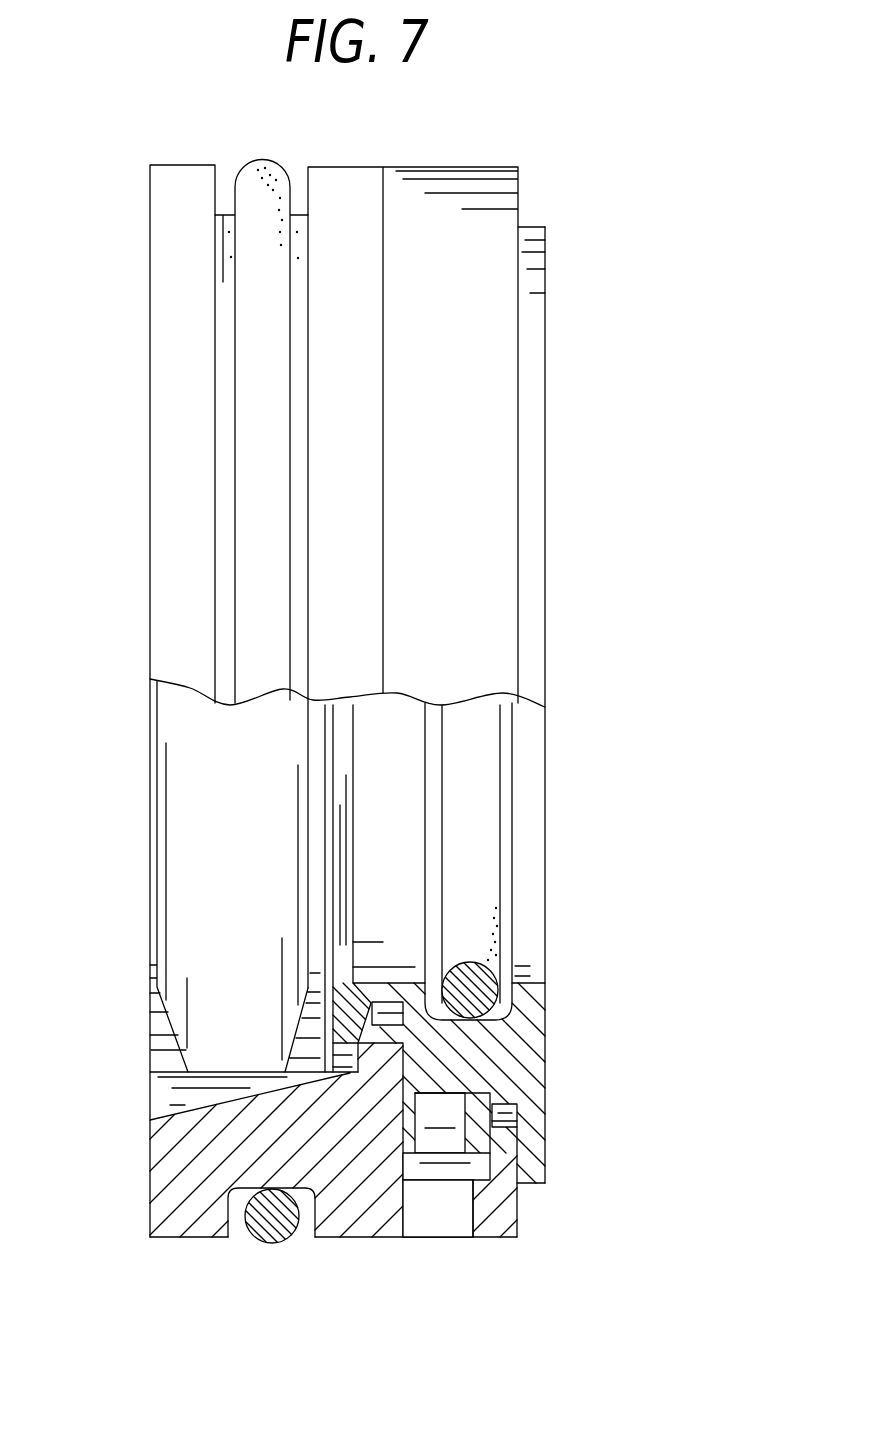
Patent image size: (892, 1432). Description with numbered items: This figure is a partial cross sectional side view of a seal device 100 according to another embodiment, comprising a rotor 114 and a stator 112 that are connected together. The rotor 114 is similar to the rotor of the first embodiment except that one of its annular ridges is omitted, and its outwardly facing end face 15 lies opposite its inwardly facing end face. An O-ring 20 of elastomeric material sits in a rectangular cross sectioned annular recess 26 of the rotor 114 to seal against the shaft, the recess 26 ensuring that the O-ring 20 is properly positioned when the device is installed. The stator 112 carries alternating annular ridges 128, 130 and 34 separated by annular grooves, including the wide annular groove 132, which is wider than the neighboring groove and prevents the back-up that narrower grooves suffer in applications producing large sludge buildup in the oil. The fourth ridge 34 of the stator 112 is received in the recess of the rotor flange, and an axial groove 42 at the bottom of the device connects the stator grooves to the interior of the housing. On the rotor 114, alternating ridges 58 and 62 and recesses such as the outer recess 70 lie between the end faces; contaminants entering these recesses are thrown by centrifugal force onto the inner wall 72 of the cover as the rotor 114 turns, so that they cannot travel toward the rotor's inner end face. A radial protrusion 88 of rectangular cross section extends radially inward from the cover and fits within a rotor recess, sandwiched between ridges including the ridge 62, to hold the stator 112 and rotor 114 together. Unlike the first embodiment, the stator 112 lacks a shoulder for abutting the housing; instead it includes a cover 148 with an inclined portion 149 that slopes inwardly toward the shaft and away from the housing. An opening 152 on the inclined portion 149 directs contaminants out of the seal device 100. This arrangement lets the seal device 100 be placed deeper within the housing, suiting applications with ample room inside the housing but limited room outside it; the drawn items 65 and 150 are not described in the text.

The seal device 100 is at (590, 398).
The outwardly facing end face 15 is at (547, 601).
The upper housing portion 65 is at (533, 233).
The inclined portion 149 is at (462, 290).
The stator 112 is at (157, 438).
The annular ridge 130 is at (310, 740).
The annular ridge 128 is at (152, 770).
The annular groove 132 is at (207, 903).
The O-ring 20 is at (498, 762).
The rotor 114 is at (538, 877).
The annular recess 26 is at (513, 947).
The annular ridge 34 is at (383, 1050).
The axial groove 42 is at (163, 1097).
The annular ridge 58 is at (413, 1130).
The annular ridge 62 is at (473, 1147).
The outer recess 70 is at (517, 1107).
The radial protrusion 88 is at (507, 1143).
The shoulder 150 is at (518, 1220).
The cover 148 is at (350, 1237).
The opening 152 is at (432, 1175).
The inner wall 72 is at (437, 1222).